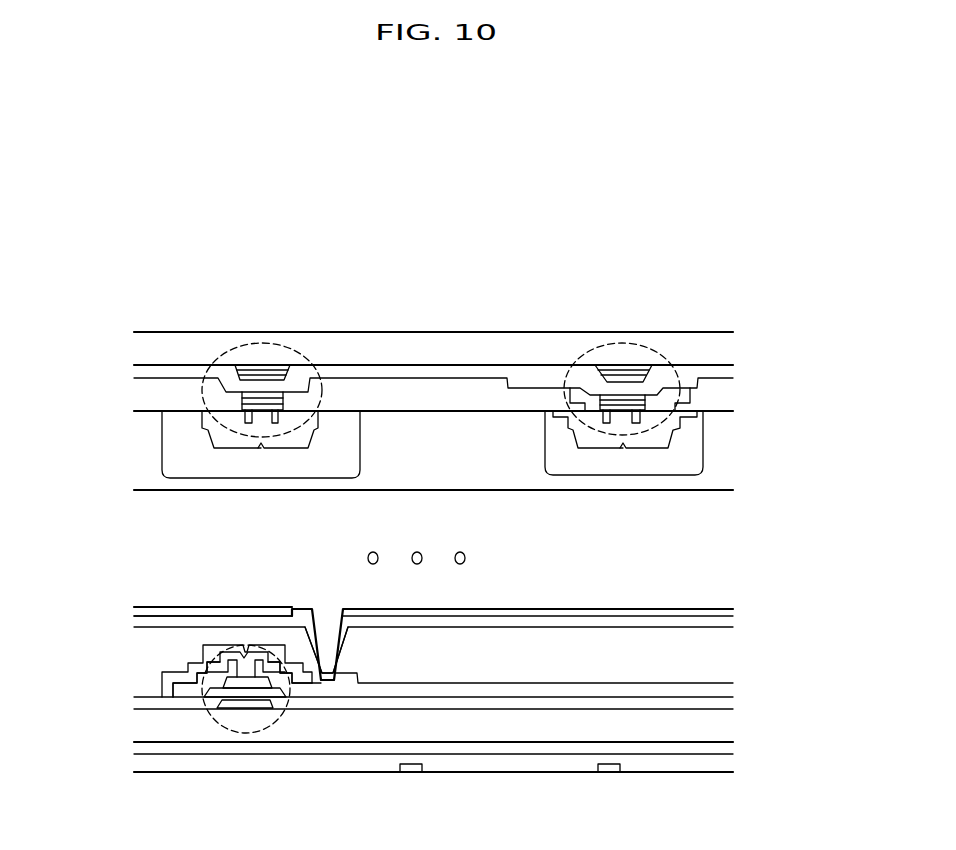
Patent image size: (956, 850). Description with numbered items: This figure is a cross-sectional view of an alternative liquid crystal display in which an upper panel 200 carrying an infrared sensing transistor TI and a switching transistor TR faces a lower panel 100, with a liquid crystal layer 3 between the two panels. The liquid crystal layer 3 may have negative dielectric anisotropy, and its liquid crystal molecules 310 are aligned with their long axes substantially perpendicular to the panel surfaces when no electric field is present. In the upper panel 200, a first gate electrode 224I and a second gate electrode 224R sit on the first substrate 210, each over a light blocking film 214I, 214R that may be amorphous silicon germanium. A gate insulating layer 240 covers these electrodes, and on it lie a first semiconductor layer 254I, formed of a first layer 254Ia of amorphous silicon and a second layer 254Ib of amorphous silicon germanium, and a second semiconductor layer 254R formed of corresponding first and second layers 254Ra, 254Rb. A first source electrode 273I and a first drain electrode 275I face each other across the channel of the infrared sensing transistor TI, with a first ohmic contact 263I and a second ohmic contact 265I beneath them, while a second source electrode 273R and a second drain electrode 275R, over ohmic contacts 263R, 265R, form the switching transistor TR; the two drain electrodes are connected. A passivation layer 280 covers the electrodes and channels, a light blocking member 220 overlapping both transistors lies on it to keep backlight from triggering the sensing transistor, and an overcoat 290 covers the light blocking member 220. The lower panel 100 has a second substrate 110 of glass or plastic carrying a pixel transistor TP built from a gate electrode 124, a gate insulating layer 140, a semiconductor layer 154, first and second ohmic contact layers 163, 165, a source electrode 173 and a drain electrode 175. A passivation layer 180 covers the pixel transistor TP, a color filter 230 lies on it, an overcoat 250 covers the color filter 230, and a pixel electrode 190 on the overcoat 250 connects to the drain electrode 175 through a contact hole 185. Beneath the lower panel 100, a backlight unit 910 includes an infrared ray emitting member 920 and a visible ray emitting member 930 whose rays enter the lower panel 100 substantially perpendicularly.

The second semiconductor layer 254R is at (130, 148).
The first layer of second semiconductor layer 254Ra is at (250, 368).
The second layer of second semiconductor layer 254Rb is at (268, 368).
The first semiconductor layer 254I is at (690, 148).
The first layer of first semiconductor layer 254Ia is at (642, 368).
The second layer of first semiconductor layer 254Ib is at (625, 368).
The first substrate 210 is at (440, 350).
The gate insulating layer 240 is at (143, 372).
The passivation layer 280 is at (143, 400).
The light blocking member 220 is at (143, 438).
The overcoat 290 is at (150, 480).
The upper panel 200 is at (740, 333).
The second gate electrode 224R is at (278, 393).
The light blocking film 214R is at (262, 393).
The first ohmic contact 263R is at (247, 425).
The second ohmic contact 265R is at (280, 425).
The second source electrode 273R is at (212, 430).
The second drain electrode 275R is at (320, 432).
The switching transistor TR is at (210, 340).
The first gate electrode 224I is at (610, 395).
The light blocking film 214I is at (628, 395).
The first ohmic contact 263I is at (608, 425).
The second ohmic contact 265I is at (638, 425).
The first source electrode 273I is at (575, 432).
The first drain electrode 275I is at (677, 432).
The infrared sensing transistor TI is at (680, 340).
The liquid crystal layer 3 is at (740, 491).
The liquid crystal molecules 310 is at (417, 552).
The pixel electrode 190 is at (568, 607).
The overcoat 250 is at (633, 616).
The color filter 230 is at (538, 658).
The contact hole 185 is at (343, 633).
The passivation layer 180 is at (472, 690).
The source electrode 173 is at (220, 652).
The drain electrode 175 is at (272, 655).
The first ohmic contact layer 163 is at (233, 658).
The second ohmic contact layer 165 is at (257, 658).
The semiconductor layer 154 is at (233, 685).
The gate electrode 124 is at (245, 705).
The gate insulating layer 140 is at (350, 702).
The second substrate 110 is at (681, 725).
The backlight unit 910 is at (718, 762).
The infrared ray emitting member 920 is at (410, 773).
The visible ray emitting member 930 is at (608, 773).
The pixel transistor TP is at (218, 722).
The lower panel 100 is at (740, 608).